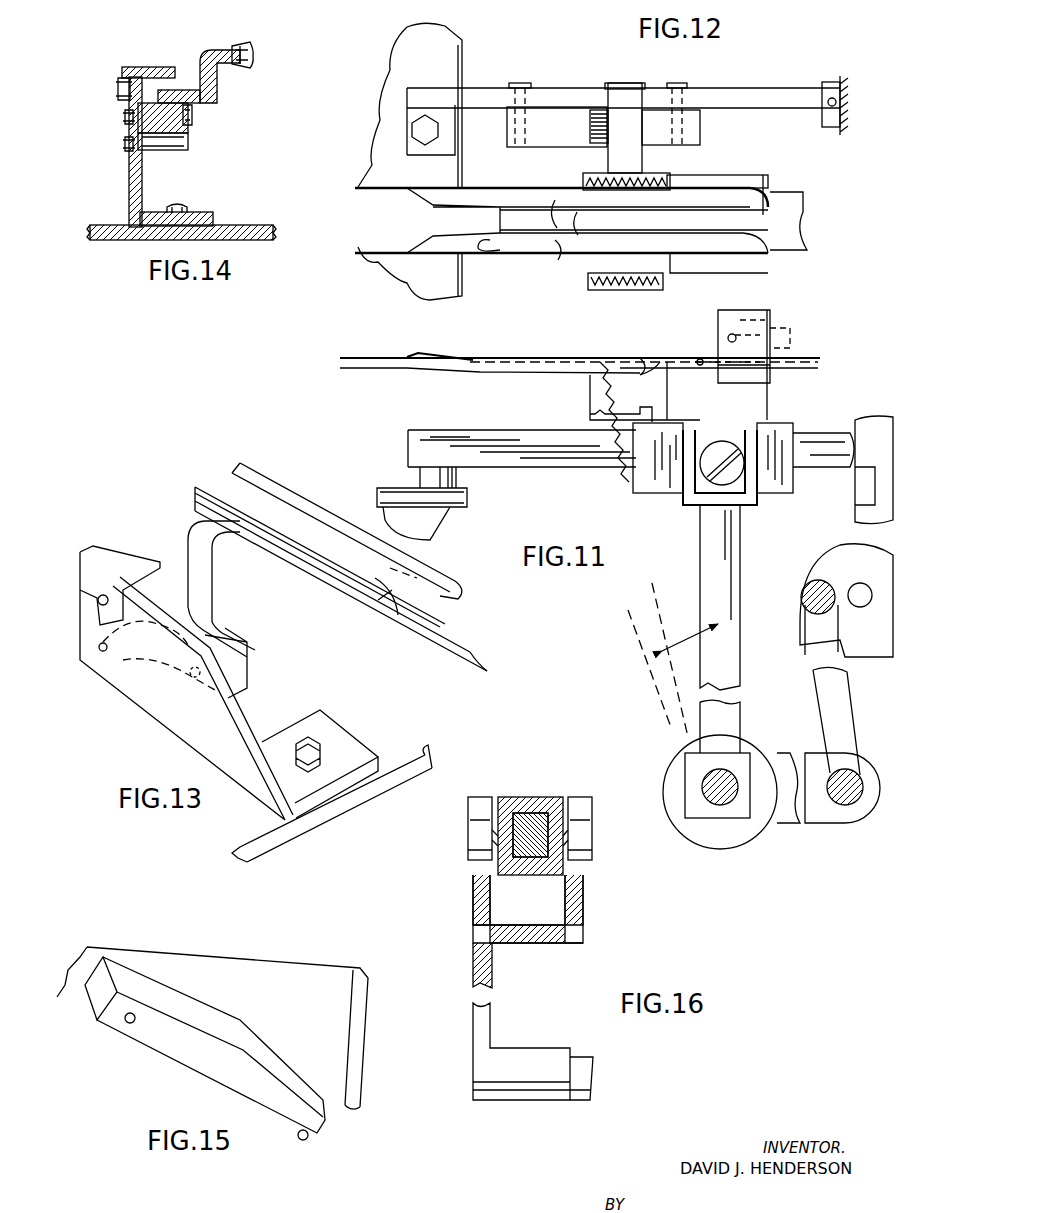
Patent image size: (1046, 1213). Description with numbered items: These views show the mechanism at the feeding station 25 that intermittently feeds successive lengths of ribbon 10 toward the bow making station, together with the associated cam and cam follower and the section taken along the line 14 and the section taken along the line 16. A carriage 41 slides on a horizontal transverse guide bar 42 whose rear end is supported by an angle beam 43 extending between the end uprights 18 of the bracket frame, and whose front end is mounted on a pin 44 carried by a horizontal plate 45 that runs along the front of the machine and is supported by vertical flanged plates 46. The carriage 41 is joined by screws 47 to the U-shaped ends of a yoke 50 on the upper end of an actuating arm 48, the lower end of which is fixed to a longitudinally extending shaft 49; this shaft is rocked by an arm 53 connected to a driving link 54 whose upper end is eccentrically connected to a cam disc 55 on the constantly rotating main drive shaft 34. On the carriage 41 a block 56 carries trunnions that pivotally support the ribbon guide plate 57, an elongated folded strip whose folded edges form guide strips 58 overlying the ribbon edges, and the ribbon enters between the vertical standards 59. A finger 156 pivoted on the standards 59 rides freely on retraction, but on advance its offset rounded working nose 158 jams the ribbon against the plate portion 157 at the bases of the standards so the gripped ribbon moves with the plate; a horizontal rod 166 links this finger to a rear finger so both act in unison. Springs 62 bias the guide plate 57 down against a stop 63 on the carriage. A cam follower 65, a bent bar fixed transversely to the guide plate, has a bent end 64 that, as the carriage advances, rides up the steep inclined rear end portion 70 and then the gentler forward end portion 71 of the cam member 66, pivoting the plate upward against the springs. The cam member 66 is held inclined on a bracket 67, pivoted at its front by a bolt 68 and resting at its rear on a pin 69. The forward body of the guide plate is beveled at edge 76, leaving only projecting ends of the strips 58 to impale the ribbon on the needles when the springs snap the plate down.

In FIG. 12, the ribbon 10 is at (808, 230).
In FIG. 11, the ribbon 10 is at (417, 370).
In FIG. 13, the ribbon 10 is at (455, 647).
In FIG. 11, the section line 14— 14 is at (348, 478).
In FIG. 13, the section line 14— 14 is at (80, 712).
In FIG. 11, the front and rear top horizontal beams 16 is at (745, 402).
In FIG. 11, the end uprights 18 is at (877, 423).
In FIG. 11, the feeding station 25 is at (405, 340).
In FIG. 11, the drive shaft 34 is at (858, 583).
In FIG. 11, the carriage 41 is at (643, 475).
In FIG. 16, the carriage 41 is at (548, 811).
In FIG. 11, the guide bar 42 is at (540, 454).
In FIG. 16, the guide bar 42 is at (528, 812).
In FIG. 11, the angle beam 43 is at (860, 490).
In FIG. 11, the pin 44 is at (460, 482).
In FIG. 14, the horizontal plate 45 is at (235, 226).
In FIG. 12, the horizontal plate 45 is at (462, 287).
In FIG. 11, the horizontal plate 45 is at (457, 497).
In FIG. 13, the horizontal plate 45 is at (392, 767).
In FIG. 11, the vertical flanged plates 46 is at (436, 530).
In FIG. 11, the screws 47 is at (735, 490).
In FIG. 16, the screws 47 is at (470, 840).
In FIG. 11, the actuating arm 48 is at (708, 542).
In FIG. 16, the actuating arm 48 is at (475, 955).
In FIG. 11, the shaft 49 is at (732, 802).
In FIG. 16, the shaft 49 is at (585, 1070).
In FIG. 11, the yoke 50 is at (685, 503).
In FIG. 16, the yoke 50 is at (585, 905).
In FIG. 11, the arm 53 is at (789, 812).
In FIG. 11, the driving link 54 is at (828, 698).
In FIG. 11, the cam disc 55 is at (812, 580).
In FIG. 12, the block 56 is at (742, 178).
In FIG. 11, the block 56 is at (760, 418).
In FIG. 14, the ribbon guide plate 57 is at (242, 68).
In FIG. 12, the ribbon guide plate 57 is at (575, 255).
In FIG. 11, the ribbon guide plate 57 is at (640, 365).
In FIG. 12, the guide strips 58 is at (561, 196).
In FIG. 11, the guide strips 58 is at (462, 356).
In FIG. 13, the guide strips 58 is at (268, 490).
In FIG. 12, the standards 59 is at (773, 195).
In FIG. 11, the standards 59 is at (760, 322).
In FIG. 12, the springs 62 is at (642, 182).
In FIG. 11, the springs 62 is at (598, 405).
In FIG. 11, the stop 63 is at (590, 393).
In FIG. 14, the bent end 64 is at (185, 91).
In FIG. 13, the bent end 64 is at (217, 615).
In FIG. 14, the cam follower 65 is at (228, 50).
In FIG. 12, the cam follower 65 is at (610, 158).
In FIG. 13, the cam follower 65 is at (197, 537).
In FIG. 14, the cam member 66 is at (137, 125).
In FIG. 12, the cam member 66 is at (555, 135).
In FIG. 13, the cam member 66 is at (247, 677).
In FIG. 15, the cam member 66 is at (183, 1050).
In FIG. 14, the bracket 67 is at (129, 190).
In FIG. 12, the bracket 67 is at (586, 88).
In FIG. 13, the bracket 67 is at (203, 740).
In FIG. 15, the bracket 67 is at (278, 973).
In FIG. 14, the bolt 68 is at (125, 116).
In FIG. 12, the bolt 68 is at (524, 83).
In FIG. 13, the bolt 68 is at (193, 677).
In FIG. 15, the bolt 68 is at (128, 1023).
In FIG. 14, the pin 69 is at (125, 146).
In FIG. 12, the pin 69 is at (684, 88).
In FIG. 13, the pin 69 is at (99, 648).
In FIG. 15, the pin 69 is at (305, 1140).
In FIG. 12, the inclined rear end portion 70 is at (660, 108).
In FIG. 13, the inclined rear end portion 70 is at (159, 655).
In FIG. 15, the inclined rear end portion 70 is at (277, 1053).
In FIG. 12, the forward end portion 71 is at (549, 110).
In FIG. 15, the forward end portion 71 is at (192, 997).
In FIG. 12, the edge 76 is at (480, 250).
In FIG. 11, the edge 76 is at (481, 372).
In FIG. 13, the edge 76 is at (392, 620).
In FIG. 11, the finger 156 is at (730, 338).
In FIG. 12, the plate portion 157 is at (757, 213).
In FIG. 11, the plate portion 157 is at (793, 363).
In FIG. 11, the working nose 158 is at (730, 358).
In FIG. 11, the horizontal rod 166 is at (788, 334).